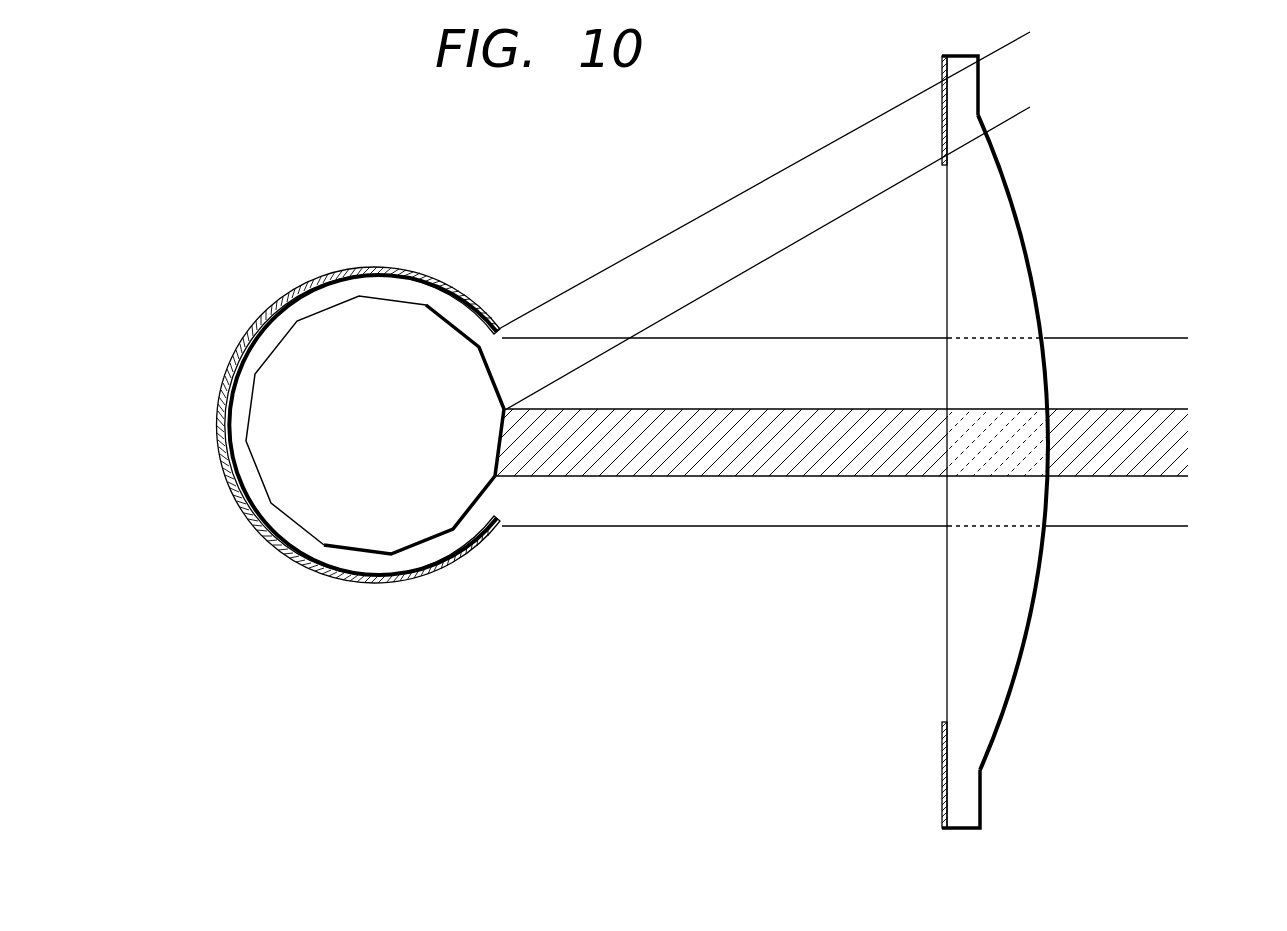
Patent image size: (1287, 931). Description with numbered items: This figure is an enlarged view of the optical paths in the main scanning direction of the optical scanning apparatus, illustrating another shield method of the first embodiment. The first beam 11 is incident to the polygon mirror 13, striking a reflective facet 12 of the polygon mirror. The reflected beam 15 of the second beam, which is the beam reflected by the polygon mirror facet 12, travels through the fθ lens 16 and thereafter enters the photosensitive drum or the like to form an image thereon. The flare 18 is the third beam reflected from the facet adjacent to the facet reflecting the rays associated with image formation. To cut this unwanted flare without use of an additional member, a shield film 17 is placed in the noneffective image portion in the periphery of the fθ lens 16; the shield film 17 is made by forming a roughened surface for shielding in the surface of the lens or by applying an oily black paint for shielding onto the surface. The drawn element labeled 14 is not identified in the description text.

The first beam 11 is at (1157, 350).
The reflective facet 12 is at (494, 460).
The polygon mirror 13 is at (397, 315).
The reflective tube / housing 14 is at (327, 275).
The reflected beam 15 is at (1180, 440).
The fθ lens 16 is at (1024, 257).
The shield film 17 is at (942, 68).
The flare 18 is at (693, 222).